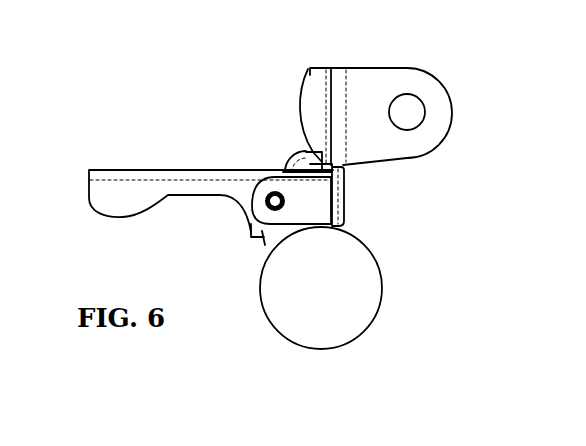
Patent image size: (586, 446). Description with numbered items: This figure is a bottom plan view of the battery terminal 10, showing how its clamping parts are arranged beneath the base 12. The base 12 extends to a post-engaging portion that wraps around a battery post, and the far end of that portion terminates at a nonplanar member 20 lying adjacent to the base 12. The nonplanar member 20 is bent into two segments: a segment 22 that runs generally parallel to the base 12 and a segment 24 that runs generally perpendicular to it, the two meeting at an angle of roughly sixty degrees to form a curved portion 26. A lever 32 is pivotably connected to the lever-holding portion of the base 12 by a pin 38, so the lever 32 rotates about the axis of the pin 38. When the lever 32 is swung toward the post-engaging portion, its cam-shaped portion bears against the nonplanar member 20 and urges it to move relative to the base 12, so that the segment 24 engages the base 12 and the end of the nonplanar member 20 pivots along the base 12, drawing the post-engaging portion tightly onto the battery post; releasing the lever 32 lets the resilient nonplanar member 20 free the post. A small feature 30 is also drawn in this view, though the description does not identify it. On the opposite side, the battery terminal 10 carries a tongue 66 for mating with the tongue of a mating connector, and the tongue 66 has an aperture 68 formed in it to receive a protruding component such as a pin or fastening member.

The battery terminal 10 is at (485, 154).
The base 12 is at (345, 184).
The nonplanar member 20 is at (292, 168).
The segment 22 is at (277, 173).
The segment 24 is at (291, 168).
The curved portion 26 is at (283, 162).
The tab 30 is at (264, 238).
The lever 32 is at (128, 170).
The pin 38 is at (250, 204).
The tongue 66 is at (436, 74).
The aperture 68 is at (410, 112).